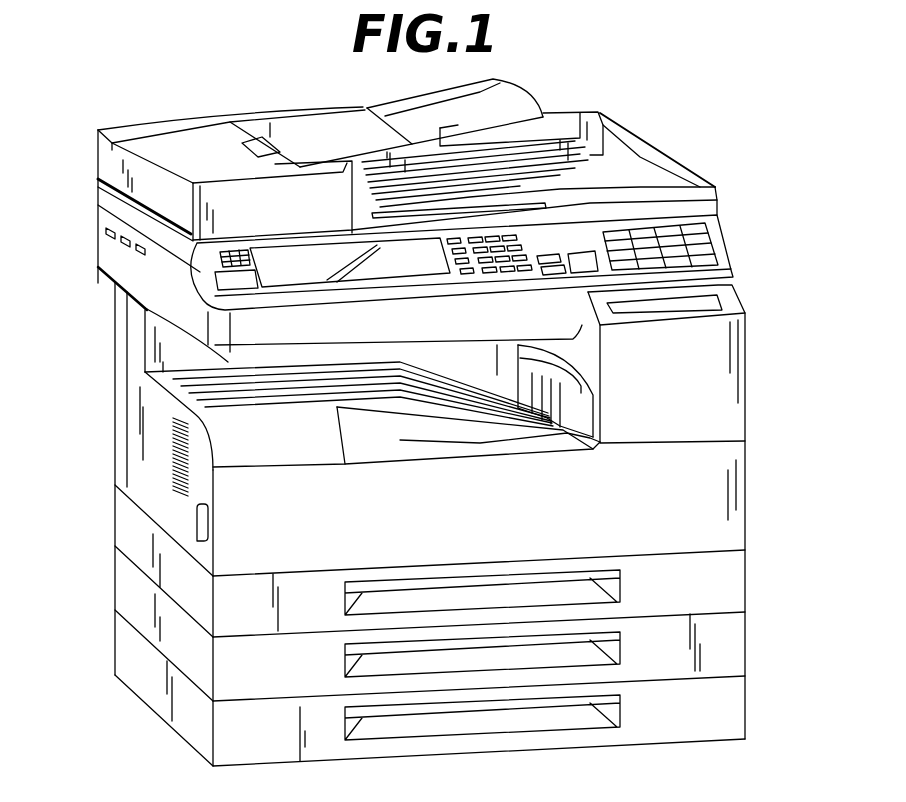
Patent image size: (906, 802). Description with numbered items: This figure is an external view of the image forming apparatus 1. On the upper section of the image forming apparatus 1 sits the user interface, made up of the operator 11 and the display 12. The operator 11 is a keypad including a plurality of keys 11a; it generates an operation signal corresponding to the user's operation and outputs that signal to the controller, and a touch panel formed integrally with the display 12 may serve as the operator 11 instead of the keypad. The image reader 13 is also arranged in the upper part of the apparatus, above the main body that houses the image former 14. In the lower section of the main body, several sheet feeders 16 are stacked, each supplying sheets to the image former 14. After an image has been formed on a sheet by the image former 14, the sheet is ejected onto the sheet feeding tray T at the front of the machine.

The image forming apparatus 1 is at (107, 80).
The operator 11 is at (565, 243).
The keys 11a is at (520, 247).
The display 12 is at (282, 270).
The image reader 13 is at (298, 137).
The image former 14 is at (762, 432).
The sheet feeder 16 is at (127, 529).
The sheet feeding tray T is at (487, 394).